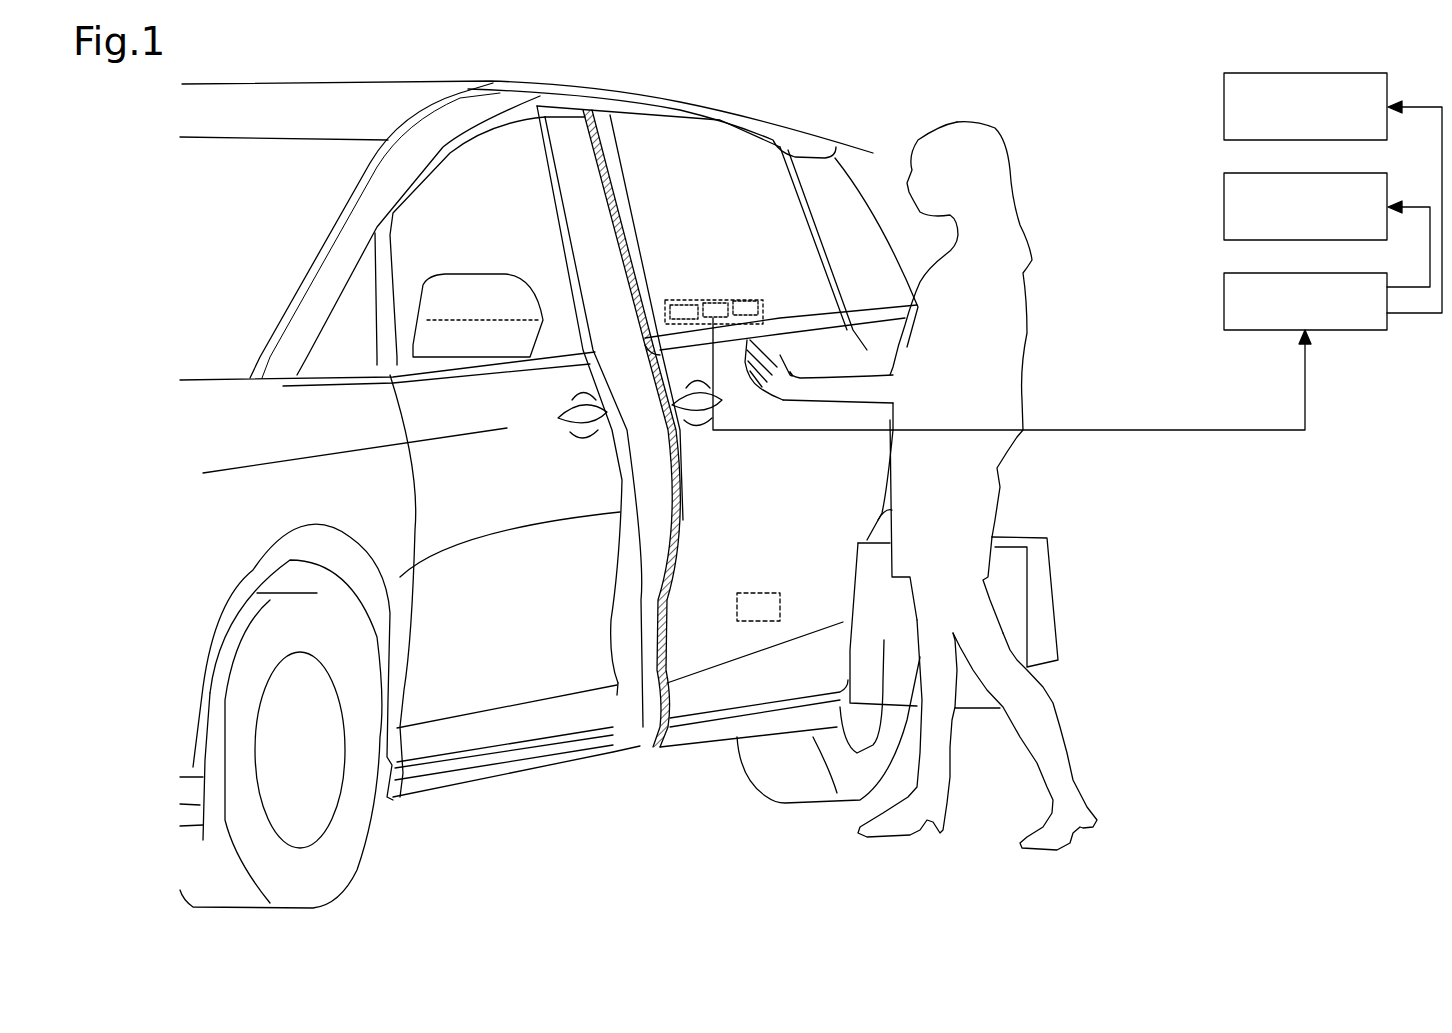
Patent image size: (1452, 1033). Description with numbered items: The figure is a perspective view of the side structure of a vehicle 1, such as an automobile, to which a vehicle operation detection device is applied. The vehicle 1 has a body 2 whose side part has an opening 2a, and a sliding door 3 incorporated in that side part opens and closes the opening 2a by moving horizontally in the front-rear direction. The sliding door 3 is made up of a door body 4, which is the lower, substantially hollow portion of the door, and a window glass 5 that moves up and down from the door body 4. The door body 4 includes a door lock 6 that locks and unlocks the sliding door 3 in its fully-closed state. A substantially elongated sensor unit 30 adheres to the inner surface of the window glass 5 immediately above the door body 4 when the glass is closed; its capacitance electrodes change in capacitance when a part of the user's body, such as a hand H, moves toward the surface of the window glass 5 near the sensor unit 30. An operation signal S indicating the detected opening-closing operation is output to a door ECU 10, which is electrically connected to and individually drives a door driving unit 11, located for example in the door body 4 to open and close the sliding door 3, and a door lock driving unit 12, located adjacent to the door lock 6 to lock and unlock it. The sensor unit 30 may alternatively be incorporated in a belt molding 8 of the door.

The vehicle 1 is at (256, 54).
The body 2 is at (811, 132).
The opening 2a is at (628, 712).
The sliding door 3 is at (683, 112).
The door body 4 is at (687, 703).
The window glass 5 is at (743, 160).
The door lock 6 is at (752, 592).
The belt molding 8 is at (797, 321).
The sensor unit 30 is at (719, 300).
The door ECU 10 is at (1297, 272).
The door driving unit 11 is at (1297, 174).
The door lock driving unit 12 is at (1297, 74).
The hand H is at (770, 403).
The operation signal S is at (1012, 375).